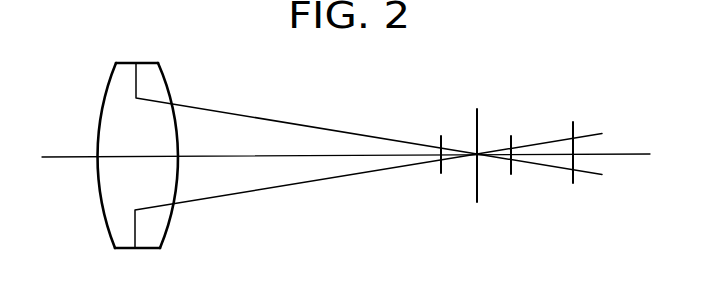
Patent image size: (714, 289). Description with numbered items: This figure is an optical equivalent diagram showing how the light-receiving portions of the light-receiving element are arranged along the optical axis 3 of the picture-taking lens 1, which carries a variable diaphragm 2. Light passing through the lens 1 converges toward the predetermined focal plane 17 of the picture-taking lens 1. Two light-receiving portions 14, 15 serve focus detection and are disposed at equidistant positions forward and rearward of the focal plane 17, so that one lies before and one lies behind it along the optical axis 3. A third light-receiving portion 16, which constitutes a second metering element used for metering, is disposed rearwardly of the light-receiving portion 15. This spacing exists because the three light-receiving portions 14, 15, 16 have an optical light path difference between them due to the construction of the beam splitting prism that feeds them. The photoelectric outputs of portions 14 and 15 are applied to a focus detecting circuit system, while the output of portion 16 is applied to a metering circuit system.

The picture-taking lens 1 is at (110, 232).
The variable diaphragm 2 is at (136, 232).
The optical axis 3 is at (52, 163).
The light-receiving portion 14 is at (440, 170).
The light-receiving portion 15 is at (512, 172).
The light-receiving portion 16 is at (568, 127).
The predetermined focal plane 17 is at (477, 120).